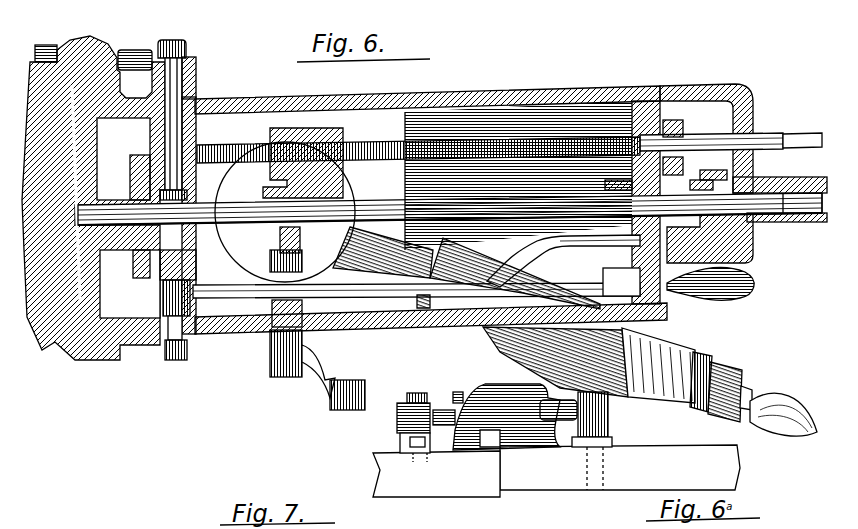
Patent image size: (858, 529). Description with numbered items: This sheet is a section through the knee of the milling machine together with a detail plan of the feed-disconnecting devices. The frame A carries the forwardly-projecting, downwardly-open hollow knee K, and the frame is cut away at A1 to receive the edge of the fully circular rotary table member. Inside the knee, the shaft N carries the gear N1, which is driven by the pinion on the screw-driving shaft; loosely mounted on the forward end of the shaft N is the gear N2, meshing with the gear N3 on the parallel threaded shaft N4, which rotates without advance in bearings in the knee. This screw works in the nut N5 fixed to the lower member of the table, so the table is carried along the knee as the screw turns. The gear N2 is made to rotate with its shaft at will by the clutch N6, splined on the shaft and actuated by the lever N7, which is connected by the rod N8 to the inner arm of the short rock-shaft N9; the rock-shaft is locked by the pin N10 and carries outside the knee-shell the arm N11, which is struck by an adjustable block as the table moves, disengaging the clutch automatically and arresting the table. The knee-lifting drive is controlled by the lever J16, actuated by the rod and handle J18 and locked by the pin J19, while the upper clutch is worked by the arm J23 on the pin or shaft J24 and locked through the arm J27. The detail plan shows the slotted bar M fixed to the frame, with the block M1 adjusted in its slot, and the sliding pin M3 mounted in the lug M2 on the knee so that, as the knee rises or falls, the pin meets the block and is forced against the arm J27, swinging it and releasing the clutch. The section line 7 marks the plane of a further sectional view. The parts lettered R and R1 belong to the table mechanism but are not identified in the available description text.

In FIG. 6, the frame A is at (93, 198).
In FIG. 6A, the frame A is at (436, 474).
In FIG. 6, the cut-away portion of frame A1 is at (130, 284).
In FIG. 6A, the hollow knee K is at (560, 490).
In FIG. 6A, the slotted bar M is at (407, 438).
In FIG. 6A, the block M1 is at (397, 421).
In FIG. 6, the lug M2 is at (50, 44).
In FIG. 6A, the lug M2 is at (473, 387).
In FIG. 6, the sliding pin M3 is at (137, 50).
In FIG. 6A, the sliding pin M3 is at (558, 399).
In FIG. 6, the shaft N is at (500, 197).
In FIG. 6, the gear N1 is at (134, 158).
In FIG. 6, the gear N2 is at (670, 230).
In FIG. 6, the gear N3 is at (690, 118).
In FIG. 6, the threaded shaft N4 is at (495, 136).
In FIG. 6, the nut N5 is at (338, 124).
In FIG. 6, the clutch N6 is at (760, 166).
In FIG. 6, the lever N7 is at (762, 232).
In FIG. 6, the rod N8 is at (375, 285).
In FIG. 6, the rock-shaft N9 is at (296, 372).
In FIG. 6, the pin N10 is at (262, 345).
In FIG. 6, the arm N11 is at (334, 410).
In FIG. 6, the eccentric disk R is at (300, 240).
In FIG. 6, the eccentric shelf R1 is at (355, 194).
In FIG. 6, the lever J16 is at (197, 257).
In FIG. 6, the rod and handle J18 is at (236, 284).
In FIG. 6, the pin J19 is at (235, 360).
In FIG. 6, the arm J23 is at (190, 200).
In FIG. 6, the pin or shaft J24 is at (197, 78).
In FIG. 6, the arm J27 is at (188, 62).
In FIG. 6A, the arm J27 is at (612, 428).
In FIG. 6, the section line 7 is at (772, 404).